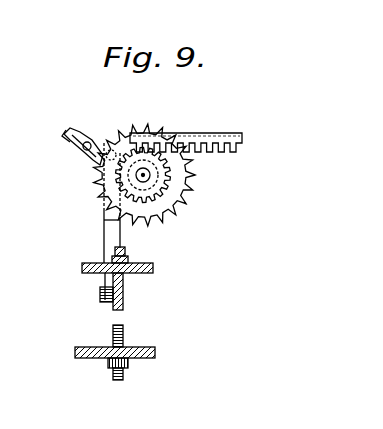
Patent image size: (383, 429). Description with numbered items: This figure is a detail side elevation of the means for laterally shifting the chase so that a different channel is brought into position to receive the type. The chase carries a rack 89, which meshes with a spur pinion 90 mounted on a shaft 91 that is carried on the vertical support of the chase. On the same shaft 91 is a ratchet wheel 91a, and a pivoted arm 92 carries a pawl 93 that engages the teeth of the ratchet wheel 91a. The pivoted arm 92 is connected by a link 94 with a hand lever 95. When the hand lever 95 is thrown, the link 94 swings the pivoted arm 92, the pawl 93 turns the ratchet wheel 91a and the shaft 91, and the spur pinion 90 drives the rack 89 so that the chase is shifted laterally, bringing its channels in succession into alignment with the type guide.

The rack 89 is at (233, 133).
The spur pinion 90 is at (165, 178).
The shaft 91 is at (141, 177).
The ratchet wheel 91a is at (180, 197).
The pivoted arm 92 is at (102, 143).
The pawl 93 is at (86, 163).
The link 94 is at (105, 222).
The hand lever 95 is at (125, 303).